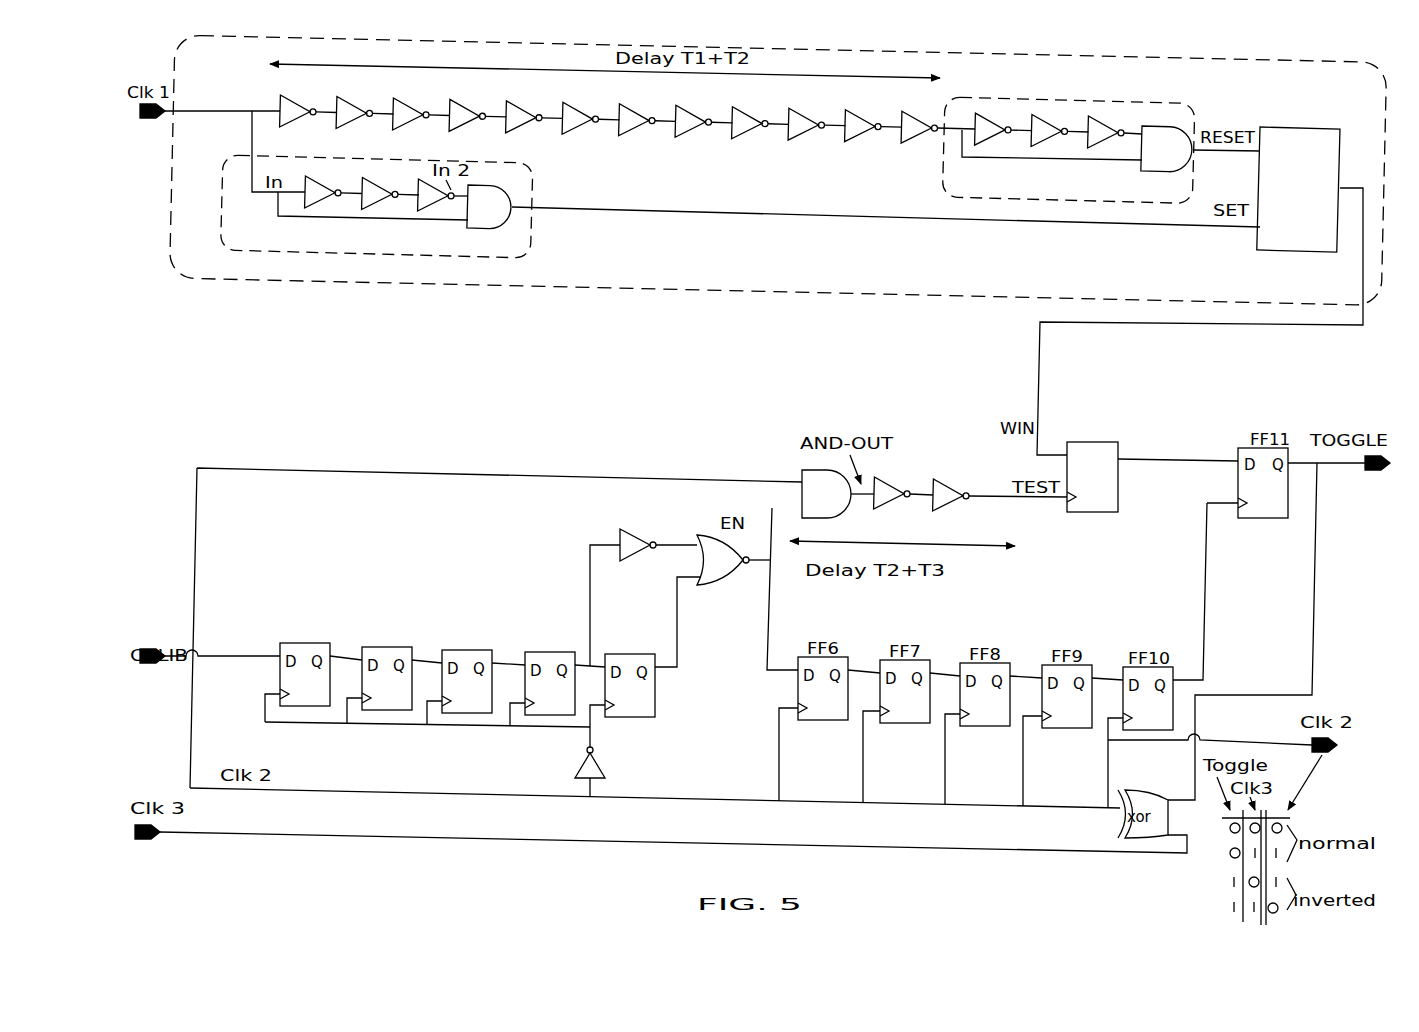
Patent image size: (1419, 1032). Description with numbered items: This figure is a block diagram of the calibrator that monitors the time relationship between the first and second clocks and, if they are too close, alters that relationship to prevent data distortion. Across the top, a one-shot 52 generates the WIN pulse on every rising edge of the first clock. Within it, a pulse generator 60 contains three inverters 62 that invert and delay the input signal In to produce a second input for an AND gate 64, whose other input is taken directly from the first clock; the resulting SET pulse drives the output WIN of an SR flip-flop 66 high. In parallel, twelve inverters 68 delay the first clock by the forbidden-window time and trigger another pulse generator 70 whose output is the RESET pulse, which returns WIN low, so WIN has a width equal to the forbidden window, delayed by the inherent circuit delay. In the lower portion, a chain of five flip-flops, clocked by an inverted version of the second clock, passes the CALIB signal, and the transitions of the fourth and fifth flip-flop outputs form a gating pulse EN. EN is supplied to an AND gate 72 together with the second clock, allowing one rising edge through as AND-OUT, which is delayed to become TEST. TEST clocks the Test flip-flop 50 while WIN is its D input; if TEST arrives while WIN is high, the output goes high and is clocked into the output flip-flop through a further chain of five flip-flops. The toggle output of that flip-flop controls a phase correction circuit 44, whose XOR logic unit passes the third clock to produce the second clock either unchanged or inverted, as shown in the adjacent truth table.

The phase correction circuit 44 is at (713, 739).
The Test flip-flop 50 is at (1106, 490).
The one-shot 52 is at (820, 249).
The pulse generator 60 is at (541, 185).
The inverters 62 is at (415, 179).
The AND gate 64 is at (500, 216).
The SR flip-flop 66 is at (1312, 194).
The inverters 68 is at (370, 99).
The pulse generator 70 is at (942, 184).
The AND gate 72 is at (836, 507).